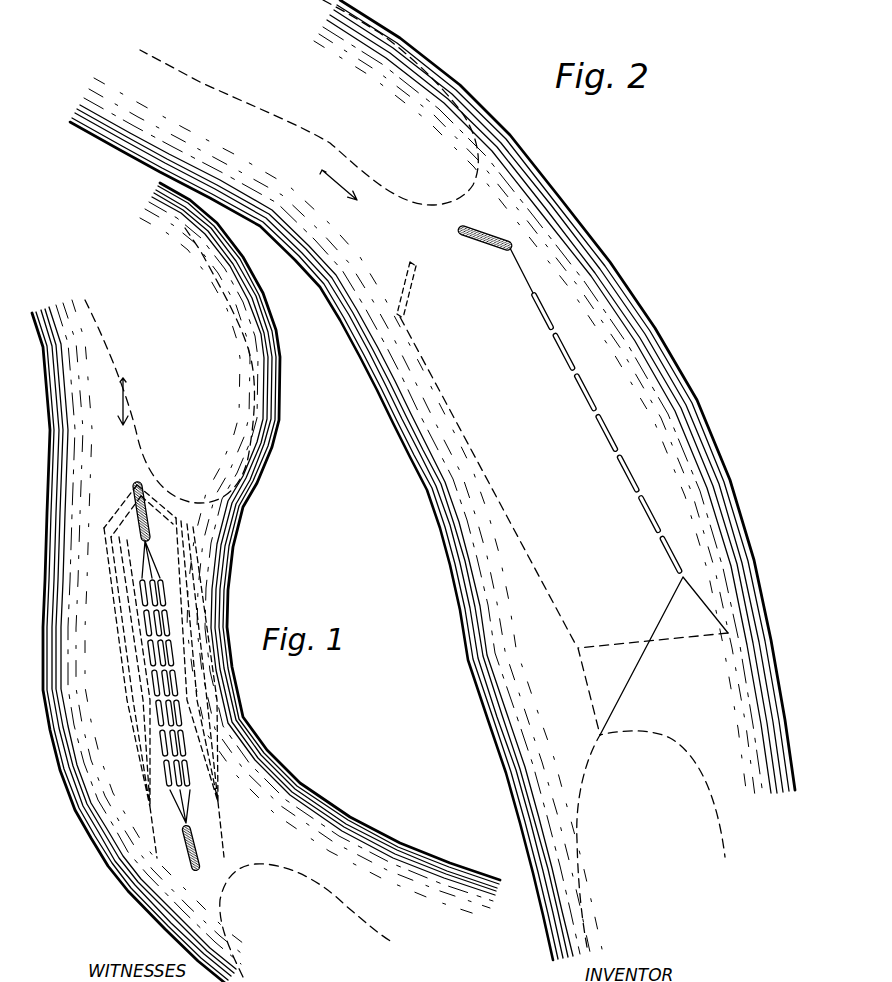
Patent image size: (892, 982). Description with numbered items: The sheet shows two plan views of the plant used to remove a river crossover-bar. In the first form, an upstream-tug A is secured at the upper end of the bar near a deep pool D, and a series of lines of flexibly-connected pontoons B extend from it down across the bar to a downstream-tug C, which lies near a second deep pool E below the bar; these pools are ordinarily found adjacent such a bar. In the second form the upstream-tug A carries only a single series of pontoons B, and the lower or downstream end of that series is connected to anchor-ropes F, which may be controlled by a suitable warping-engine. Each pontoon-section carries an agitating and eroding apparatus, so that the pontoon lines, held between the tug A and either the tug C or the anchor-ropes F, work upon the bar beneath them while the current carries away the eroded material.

In FIG. 1, the upstream-tug A is at (153, 528).
In FIG. 2, the upstream-tug A is at (478, 233).
In FIG. 1, the pontoons B is at (160, 703).
In FIG. 2, the pontoons B is at (626, 471).
In FIG. 1, the downstream-tug C is at (197, 863).
In FIG. 1, the deep pool D is at (169, 365).
In FIG. 1, the deep pool E is at (306, 920).
In FIG. 2, the anchor-ropes F is at (651, 839).